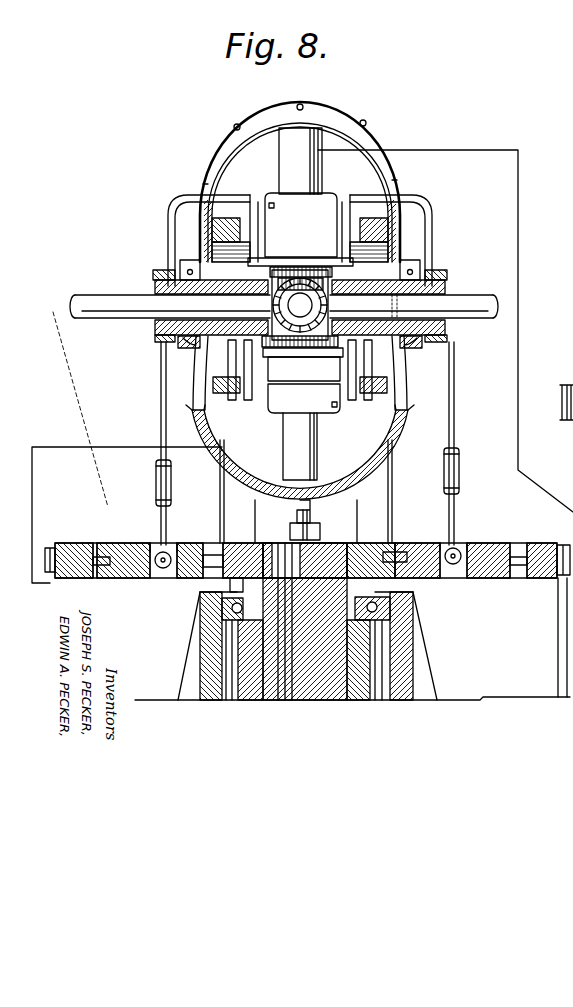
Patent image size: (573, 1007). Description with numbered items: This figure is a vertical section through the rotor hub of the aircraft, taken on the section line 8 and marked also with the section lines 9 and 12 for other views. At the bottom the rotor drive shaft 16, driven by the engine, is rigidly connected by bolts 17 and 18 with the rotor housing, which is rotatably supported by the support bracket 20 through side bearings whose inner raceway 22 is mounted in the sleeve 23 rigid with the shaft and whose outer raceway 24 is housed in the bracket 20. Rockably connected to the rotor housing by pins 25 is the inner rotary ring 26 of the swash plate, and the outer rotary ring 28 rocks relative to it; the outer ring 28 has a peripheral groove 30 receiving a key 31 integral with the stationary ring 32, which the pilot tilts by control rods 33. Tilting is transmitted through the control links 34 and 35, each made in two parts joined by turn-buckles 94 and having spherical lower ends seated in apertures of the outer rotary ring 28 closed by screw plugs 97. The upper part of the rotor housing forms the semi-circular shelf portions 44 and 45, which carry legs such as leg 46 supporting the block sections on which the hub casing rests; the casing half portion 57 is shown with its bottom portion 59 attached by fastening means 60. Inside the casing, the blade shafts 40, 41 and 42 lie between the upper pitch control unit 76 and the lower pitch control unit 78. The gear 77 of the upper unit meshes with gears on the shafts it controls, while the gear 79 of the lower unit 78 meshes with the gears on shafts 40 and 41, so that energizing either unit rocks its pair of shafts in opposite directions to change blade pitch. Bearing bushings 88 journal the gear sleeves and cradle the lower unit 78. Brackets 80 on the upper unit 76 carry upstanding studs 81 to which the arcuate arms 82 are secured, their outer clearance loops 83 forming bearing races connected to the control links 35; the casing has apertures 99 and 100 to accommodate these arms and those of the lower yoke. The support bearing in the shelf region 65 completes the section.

The section line 8 is at (538, 392).
The section line 9 is at (27, 328).
The section line indicator 12 is at (145, 600).
The rotor drive shaft 16 is at (318, 600).
The bolt 17 is at (310, 633).
The bolt 18 is at (310, 700).
The support bracket 20 is at (195, 680).
The inner raceway 22 is at (415, 608).
The sleeve 23 is at (395, 660).
The outer raceway 24 is at (400, 588).
The pin 25 is at (170, 580).
The inner rotary ring 26 is at (115, 543).
The outer rotary ring 28 is at (498, 543).
The peripheral groove 30 is at (118, 580).
The key 31 is at (98, 567).
The stationary ring 32 is at (66, 545).
The control rod 33 is at (50, 578).
The control link 34 is at (312, 518).
The control link 35 is at (160, 417).
The shaft 40 is at (97, 300).
The shaft 41 is at (480, 294).
The shaft 42 is at (272, 303).
The shelf portion 44 is at (236, 541).
The shelf portion 45 is at (362, 541).
The leg 46 is at (226, 500).
The hub casing half portion 57 is at (383, 160).
The bottom portion 59 is at (390, 471).
The fastening means 60 is at (186, 420).
The bearing 65 is at (152, 337).
The upper pitch control unit 76 is at (322, 163).
The gear 77 is at (300, 282).
The lower pitch control unit 78 is at (290, 468).
The gear 79 is at (300, 374).
The bracket 80 is at (262, 262).
The stud 81 is at (262, 199).
The arcuate arm 82 is at (168, 213).
The clearance loop 83 is at (448, 270).
The bearing bushing 88 is at (180, 347).
The turn-buckle 94 is at (156, 478).
The screw plug 97 is at (163, 578).
The aperture 99 is at (203, 184).
The aperture 100 is at (200, 393).